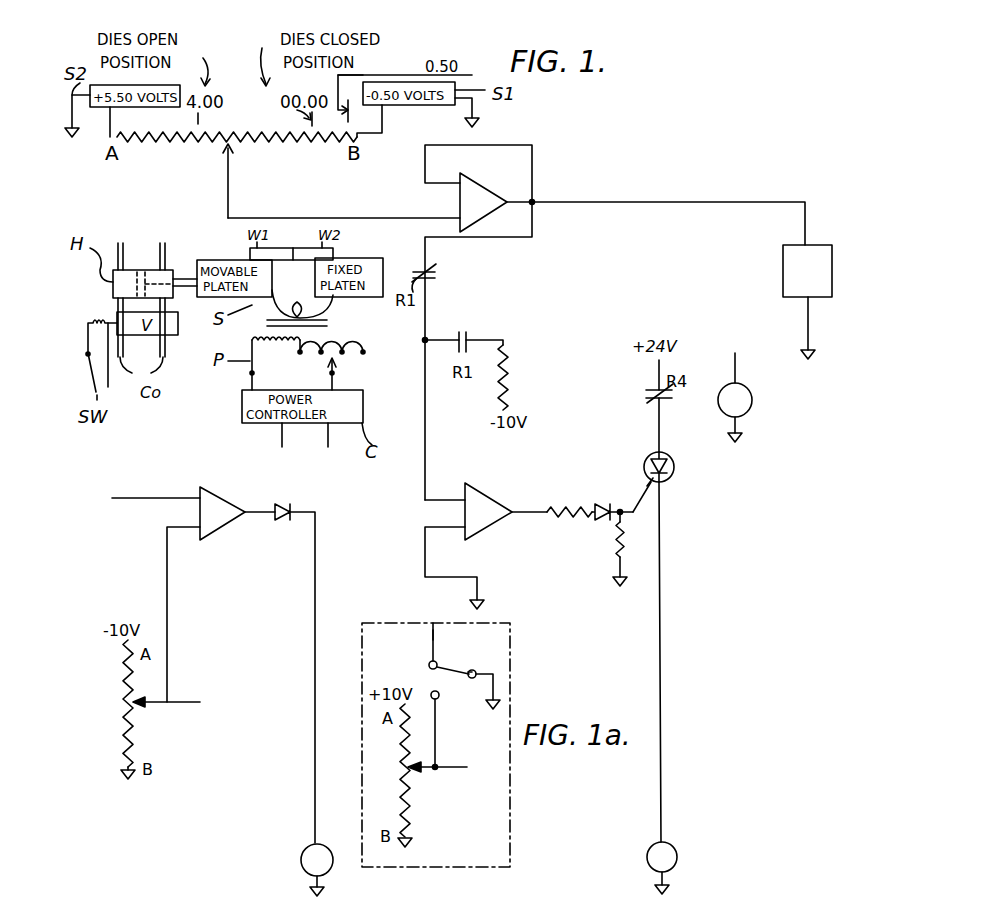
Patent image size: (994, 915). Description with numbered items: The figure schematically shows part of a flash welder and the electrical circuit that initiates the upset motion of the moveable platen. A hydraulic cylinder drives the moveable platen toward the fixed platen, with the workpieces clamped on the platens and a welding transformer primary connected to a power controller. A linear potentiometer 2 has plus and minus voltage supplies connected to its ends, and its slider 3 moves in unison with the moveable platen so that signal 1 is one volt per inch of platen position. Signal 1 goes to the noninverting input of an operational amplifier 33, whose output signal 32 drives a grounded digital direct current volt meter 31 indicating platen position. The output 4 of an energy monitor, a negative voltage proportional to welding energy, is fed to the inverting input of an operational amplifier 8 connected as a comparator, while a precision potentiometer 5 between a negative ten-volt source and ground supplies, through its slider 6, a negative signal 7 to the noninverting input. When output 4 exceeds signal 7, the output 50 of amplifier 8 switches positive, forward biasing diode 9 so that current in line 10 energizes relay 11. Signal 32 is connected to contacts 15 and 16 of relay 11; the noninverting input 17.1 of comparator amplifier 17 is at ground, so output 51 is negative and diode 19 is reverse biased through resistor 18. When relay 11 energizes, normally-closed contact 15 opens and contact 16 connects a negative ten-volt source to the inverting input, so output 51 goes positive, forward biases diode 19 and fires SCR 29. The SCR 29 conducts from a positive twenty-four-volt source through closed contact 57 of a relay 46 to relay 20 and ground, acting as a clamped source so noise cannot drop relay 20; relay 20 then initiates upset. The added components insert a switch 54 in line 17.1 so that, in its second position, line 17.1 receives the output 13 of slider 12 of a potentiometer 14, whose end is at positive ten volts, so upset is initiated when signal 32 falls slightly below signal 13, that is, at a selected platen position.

In FIG. 1, the signal 1 is at (315, 218).
In FIG. 1A, the signal 1 is at (466, 663).
In FIG. 1, the linear potentiometer 2 is at (193, 150).
In FIG. 1A, the linear potentiometer 2 is at (444, 705).
In FIG. 1, the slider 3 is at (226, 205).
In FIG. 1, the output of energy monitor 4 is at (147, 495).
In FIG. 1, the potentiometer 5 is at (121, 684).
In FIG. 1, the slider 6 is at (160, 704).
In FIG. 1, the signal 7 is at (170, 613).
In FIG. 1, the operational amplifier 8 is at (228, 500).
In FIG. 1, the diode 9 is at (280, 528).
In FIG. 1, the line 10 is at (312, 704).
In FIG. 1, the relay 11 is at (301, 853).
In FIG. 1A, the slider 12 is at (453, 770).
In FIG. 1A, the output 13 is at (437, 735).
In FIG. 1A, the potentiometer 14 is at (412, 805).
In FIG. 1, the normally-closed contact 15 is at (437, 273).
In FIG. 1, the contact 16 is at (462, 331).
In FIG. 1, the comparator amplifier 17 is at (488, 497).
In FIG. 1, the noninverting input 17.1 is at (430, 563).
In FIG. 1A, the noninverting input 17.1 is at (436, 641).
In FIG. 1, the resistor 18 is at (578, 502).
In FIG. 1, the diode 19 is at (598, 548).
In FIG. 1, the relay 20 is at (678, 845).
In FIG. 1, the SCR 29 is at (697, 469).
In FIG. 1, the digital direct current volt meter 31 is at (783, 274).
In FIG. 1, the output signal 32 is at (598, 202).
In FIG. 1, the operational amplifier 33 is at (480, 191).
In FIG. 1, the relay 46 is at (752, 400).
In FIG. 1, the output 50 is at (256, 520).
In FIG. 1, the output 51 is at (533, 516).
In FIG. 1A, the switch 54 is at (430, 672).
In FIG. 1, the contact 57 is at (648, 396).